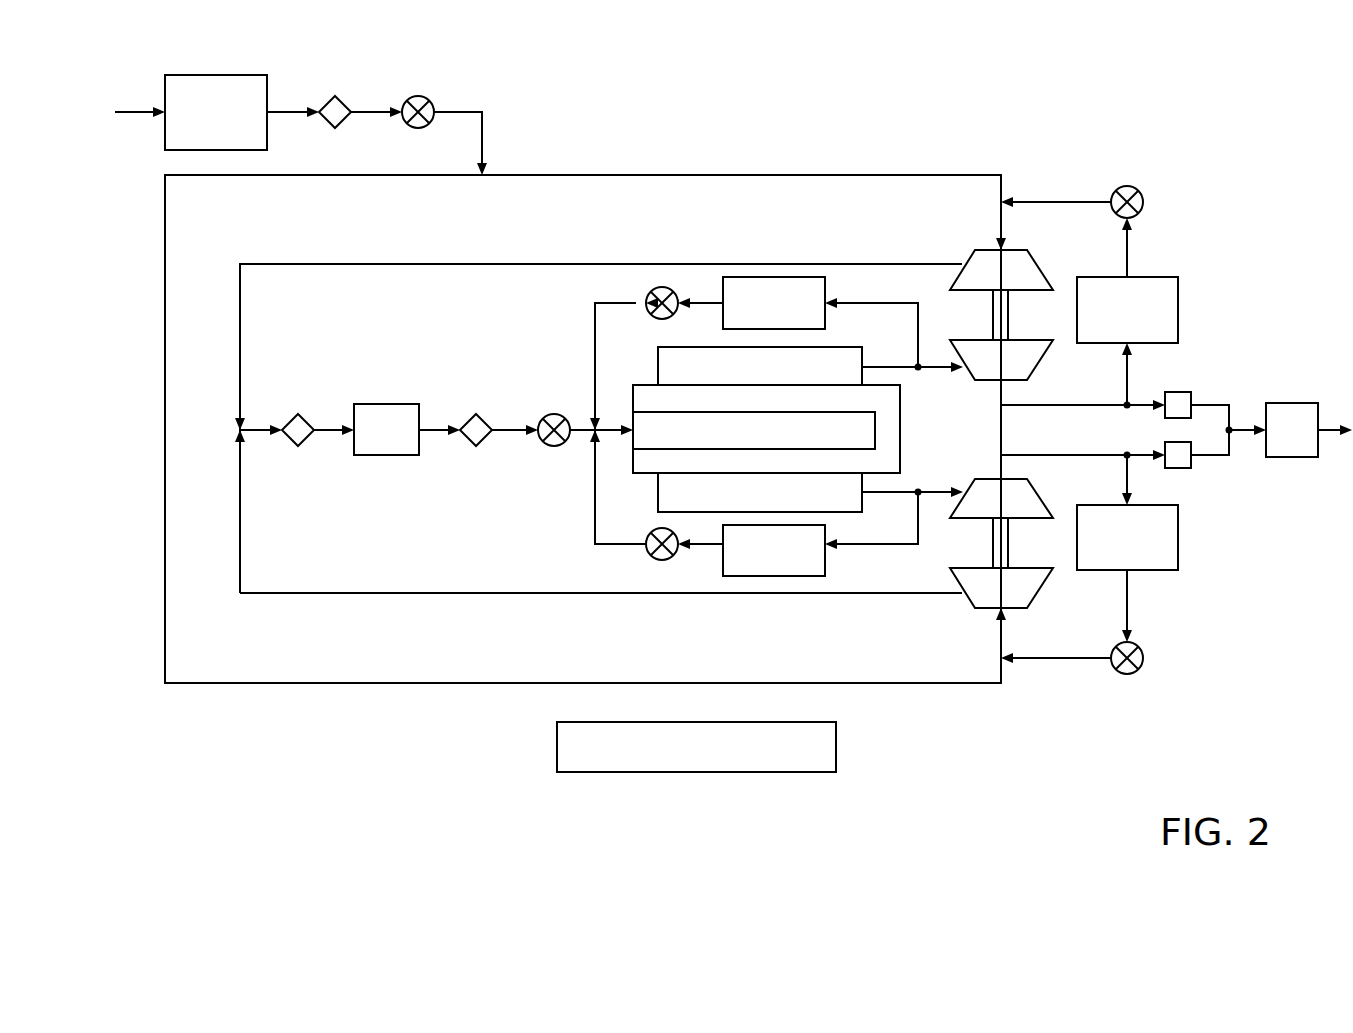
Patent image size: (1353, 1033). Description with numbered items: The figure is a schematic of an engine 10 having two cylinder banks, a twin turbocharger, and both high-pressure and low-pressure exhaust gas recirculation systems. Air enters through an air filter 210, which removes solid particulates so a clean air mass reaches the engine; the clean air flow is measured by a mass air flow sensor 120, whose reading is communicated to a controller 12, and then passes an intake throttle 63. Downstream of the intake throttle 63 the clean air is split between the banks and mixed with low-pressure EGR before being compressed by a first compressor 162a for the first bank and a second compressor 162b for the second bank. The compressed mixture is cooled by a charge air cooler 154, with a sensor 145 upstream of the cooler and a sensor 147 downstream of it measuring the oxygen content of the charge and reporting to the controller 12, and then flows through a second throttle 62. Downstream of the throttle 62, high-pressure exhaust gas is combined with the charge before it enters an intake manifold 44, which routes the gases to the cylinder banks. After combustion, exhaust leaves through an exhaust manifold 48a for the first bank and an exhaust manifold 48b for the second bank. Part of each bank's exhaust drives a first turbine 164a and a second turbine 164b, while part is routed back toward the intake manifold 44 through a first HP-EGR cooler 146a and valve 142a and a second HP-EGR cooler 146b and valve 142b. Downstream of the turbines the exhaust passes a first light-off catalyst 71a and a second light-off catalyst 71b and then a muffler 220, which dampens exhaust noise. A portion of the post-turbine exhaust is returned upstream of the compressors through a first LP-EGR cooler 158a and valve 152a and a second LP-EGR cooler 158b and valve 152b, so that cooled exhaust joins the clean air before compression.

The engine 10 is at (1272, 160).
The controller 12 is at (696, 747).
The intake manifold 44 is at (766, 429).
The exhaust manifold 48a is at (760, 366).
The exhaust manifold 48b is at (760, 492).
The throttle 62 is at (549, 418).
The intake throttle 63 is at (420, 96).
The first light-off catalyst 71a is at (1178, 392).
The second light-off catalyst 71b is at (1178, 468).
The mass air flow sensor 120 is at (330, 101).
The valve 142a is at (652, 292).
The valve 142b is at (654, 556).
The sensor 145 is at (292, 418).
The first HP-EGR cooler 146a is at (825, 290).
The second HP-EGR cooler 146b is at (825, 566).
The sensor 147 is at (470, 418).
The valve 152a is at (1140, 194).
The valve 152b is at (1140, 650).
The charge air cooler 154 is at (405, 404).
The first LP-EGR cooler 158a is at (1178, 310).
The second LP-EGR cooler 158b is at (1178, 538).
The first compressor 162a is at (1001, 270).
The second compressor 162b is at (1001, 588).
The first turbine 164a is at (1001, 360).
The second turbine 164b is at (1001, 498).
The air filter 210 is at (192, 75).
The muffler 220 is at (1272, 403).